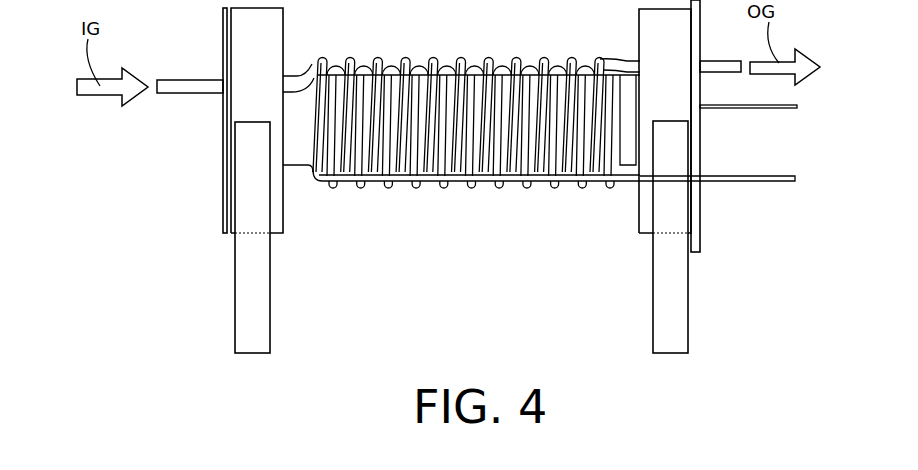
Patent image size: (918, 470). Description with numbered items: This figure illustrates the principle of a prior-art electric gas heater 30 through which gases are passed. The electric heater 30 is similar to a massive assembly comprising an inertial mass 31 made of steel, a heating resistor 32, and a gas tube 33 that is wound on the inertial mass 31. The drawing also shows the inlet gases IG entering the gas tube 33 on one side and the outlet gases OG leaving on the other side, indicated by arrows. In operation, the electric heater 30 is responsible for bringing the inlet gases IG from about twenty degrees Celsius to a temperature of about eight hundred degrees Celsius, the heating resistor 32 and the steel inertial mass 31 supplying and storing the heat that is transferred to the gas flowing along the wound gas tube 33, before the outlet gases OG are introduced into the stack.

The electric heater 30 is at (200, 146).
The inertial mass 31 is at (297, 158).
The heating resistor 32 is at (767, 110).
The gas tube 33 is at (188, 82).